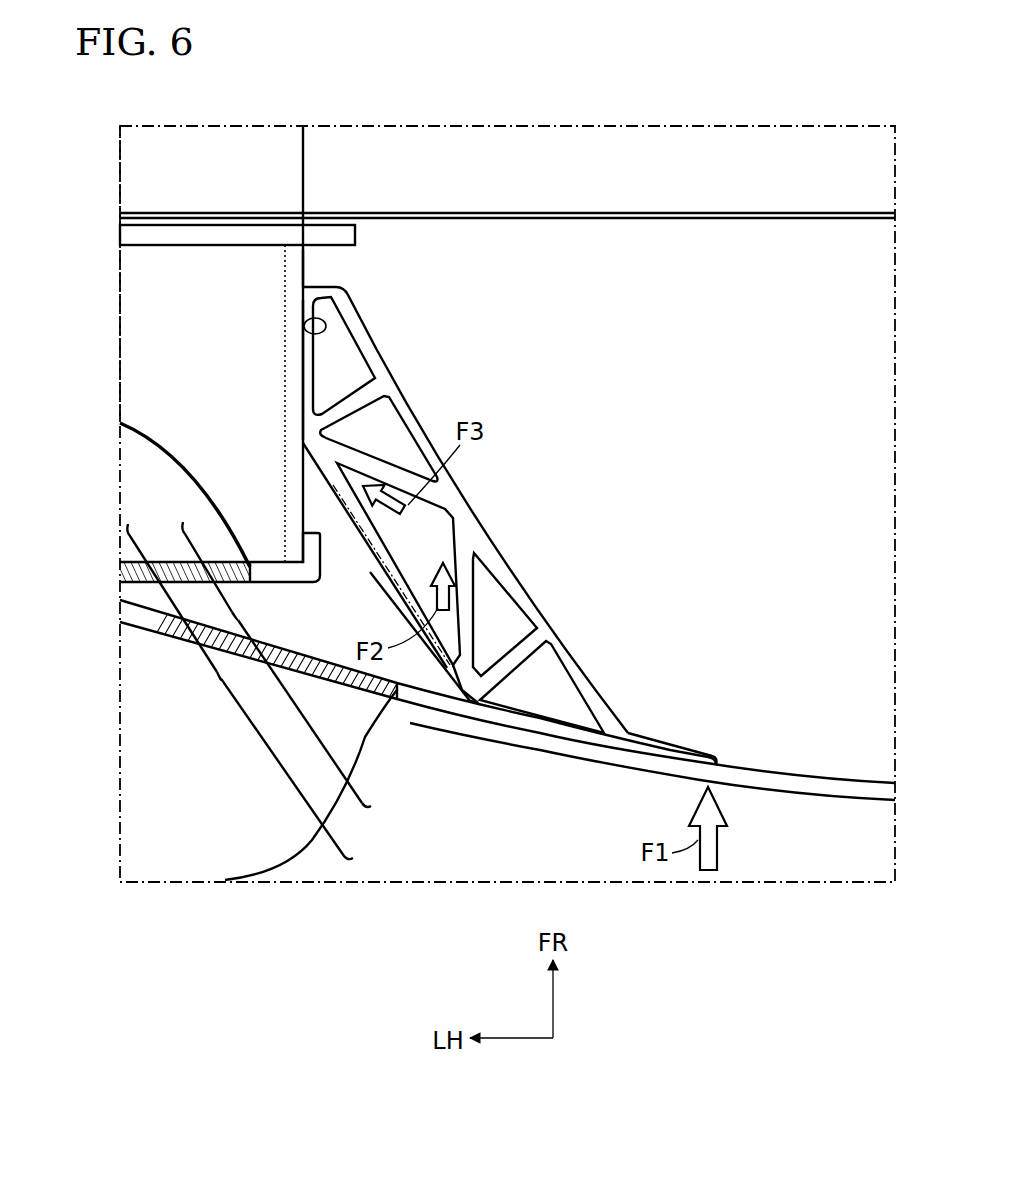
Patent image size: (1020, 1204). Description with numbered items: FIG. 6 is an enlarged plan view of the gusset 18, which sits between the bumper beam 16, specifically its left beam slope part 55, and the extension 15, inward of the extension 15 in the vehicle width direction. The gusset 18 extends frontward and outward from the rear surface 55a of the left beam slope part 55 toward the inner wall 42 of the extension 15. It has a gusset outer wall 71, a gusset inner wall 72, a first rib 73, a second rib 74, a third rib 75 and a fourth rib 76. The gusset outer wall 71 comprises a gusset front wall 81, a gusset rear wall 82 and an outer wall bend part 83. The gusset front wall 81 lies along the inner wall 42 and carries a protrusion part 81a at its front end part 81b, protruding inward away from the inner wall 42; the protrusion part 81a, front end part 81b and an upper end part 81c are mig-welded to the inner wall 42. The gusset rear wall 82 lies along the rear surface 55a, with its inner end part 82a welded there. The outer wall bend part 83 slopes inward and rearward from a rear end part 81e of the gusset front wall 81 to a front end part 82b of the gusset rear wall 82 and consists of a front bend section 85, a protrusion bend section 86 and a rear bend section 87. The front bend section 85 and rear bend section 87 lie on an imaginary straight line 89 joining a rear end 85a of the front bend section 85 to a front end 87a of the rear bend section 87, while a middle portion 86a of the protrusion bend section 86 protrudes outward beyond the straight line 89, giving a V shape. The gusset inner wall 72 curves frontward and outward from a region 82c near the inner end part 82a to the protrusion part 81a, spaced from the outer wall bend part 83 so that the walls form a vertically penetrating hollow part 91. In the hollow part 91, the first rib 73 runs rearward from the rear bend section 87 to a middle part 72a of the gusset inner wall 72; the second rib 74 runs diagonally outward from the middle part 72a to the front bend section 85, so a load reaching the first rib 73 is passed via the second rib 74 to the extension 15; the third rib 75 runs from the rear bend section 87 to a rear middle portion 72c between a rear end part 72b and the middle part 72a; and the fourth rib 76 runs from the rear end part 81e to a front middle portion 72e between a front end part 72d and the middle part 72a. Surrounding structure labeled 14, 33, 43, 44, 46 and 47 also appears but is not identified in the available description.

The roof side rail 14 is at (297, 172).
The extension 15 is at (123, 351).
The bumper beam 16 is at (808, 808).
The gusset 18 is at (482, 462).
The roof panel flange 33 is at (605, 230).
The inner wall 42 is at (305, 326).
The inner panel 43 is at (150, 294).
The pillar inner 44 is at (150, 470).
The roof cross member 46 is at (207, 232).
The outer panel section 47 is at (137, 580).
The left beam slope part 55 is at (445, 855).
The rear surface 55a is at (590, 724).
The gusset outer wall 71 is at (221, 676).
The gusset inner wall 72 is at (512, 550).
The middle part 72a is at (455, 540).
The rear end part 72b is at (634, 732).
The rear middle portion 72c is at (543, 622).
The front end part 72d is at (342, 290).
The front middle portion 72e is at (389, 392).
The first rib 73 is at (470, 613).
The second rib 74 is at (377, 467).
The third rib 75 is at (513, 670).
The fourth rib 76 is at (346, 400).
The gusset front wall 81 is at (135, 527).
The protrusion part 81a is at (323, 288).
The front end part 81b is at (312, 294).
The upper end part 81c is at (303, 373).
The rear end part 81e is at (305, 435).
The gusset rear wall 82 is at (560, 742).
The inner end part 82a is at (712, 750).
The front end part 82b is at (477, 712).
The region 82c is at (647, 748).
The outer wall bend part 83 is at (230, 617).
The front bend section 85 is at (190, 527).
The rear end 85a is at (313, 462).
The protrusion bend section 86 is at (375, 600).
The middle portion 86a is at (372, 580).
The rear bend section 87 is at (456, 685).
The front end 87a is at (457, 665).
The straight line 89 is at (388, 563).
The hollow part 91 is at (472, 517).